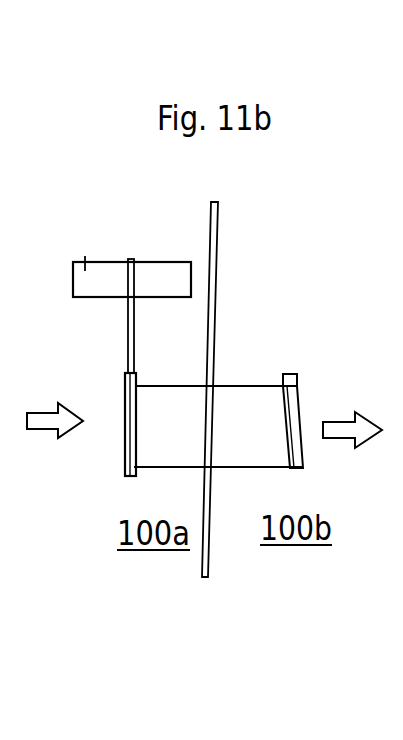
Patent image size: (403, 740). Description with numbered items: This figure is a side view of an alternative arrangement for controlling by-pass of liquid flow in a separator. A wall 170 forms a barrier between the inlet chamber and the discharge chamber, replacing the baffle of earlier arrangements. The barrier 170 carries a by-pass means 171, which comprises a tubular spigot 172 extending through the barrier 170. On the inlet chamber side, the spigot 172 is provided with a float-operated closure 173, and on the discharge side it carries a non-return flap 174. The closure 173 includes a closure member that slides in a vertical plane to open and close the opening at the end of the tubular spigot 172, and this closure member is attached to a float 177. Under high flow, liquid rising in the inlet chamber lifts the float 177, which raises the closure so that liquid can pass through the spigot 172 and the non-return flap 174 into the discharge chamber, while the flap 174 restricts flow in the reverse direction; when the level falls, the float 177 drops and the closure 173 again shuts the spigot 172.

The wall 170 is at (208, 540).
The by-pass means 171 is at (257, 357).
The tubular spigot 172 is at (167, 450).
The float-operated closure 173 is at (110, 446).
The non-return flap 174 is at (325, 392).
The float 177 is at (97, 282).